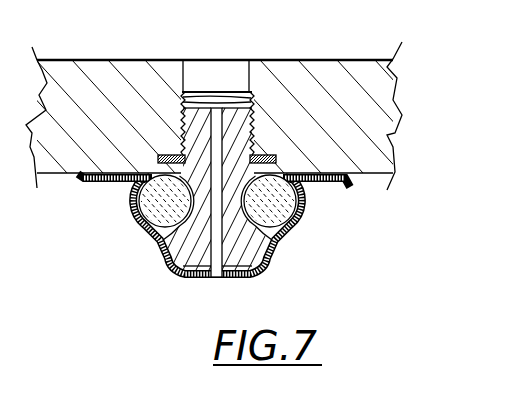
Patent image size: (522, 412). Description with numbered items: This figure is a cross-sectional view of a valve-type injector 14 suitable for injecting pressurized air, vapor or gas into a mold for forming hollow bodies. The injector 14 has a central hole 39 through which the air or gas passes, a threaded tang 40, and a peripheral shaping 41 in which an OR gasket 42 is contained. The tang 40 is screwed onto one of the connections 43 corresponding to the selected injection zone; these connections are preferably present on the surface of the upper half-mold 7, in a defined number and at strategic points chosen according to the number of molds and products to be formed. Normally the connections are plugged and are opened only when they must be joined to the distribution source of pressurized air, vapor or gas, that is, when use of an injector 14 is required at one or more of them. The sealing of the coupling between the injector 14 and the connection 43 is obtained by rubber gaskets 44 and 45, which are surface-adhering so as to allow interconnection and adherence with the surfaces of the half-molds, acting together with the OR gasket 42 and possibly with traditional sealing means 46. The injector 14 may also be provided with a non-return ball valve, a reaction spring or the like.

The upper half-mold 7 is at (338, 73).
The injector 14 is at (243, 245).
The central hole 39 is at (217, 266).
The threaded tang 40 is at (256, 128).
The peripheral shaping 41 is at (173, 248).
The OR gasket 42 is at (155, 210).
The connection 43 is at (199, 73).
The rubber gasket 44 is at (300, 211).
The rubber gasket 45 is at (102, 177).
The traditional sealing means 46 is at (273, 155).